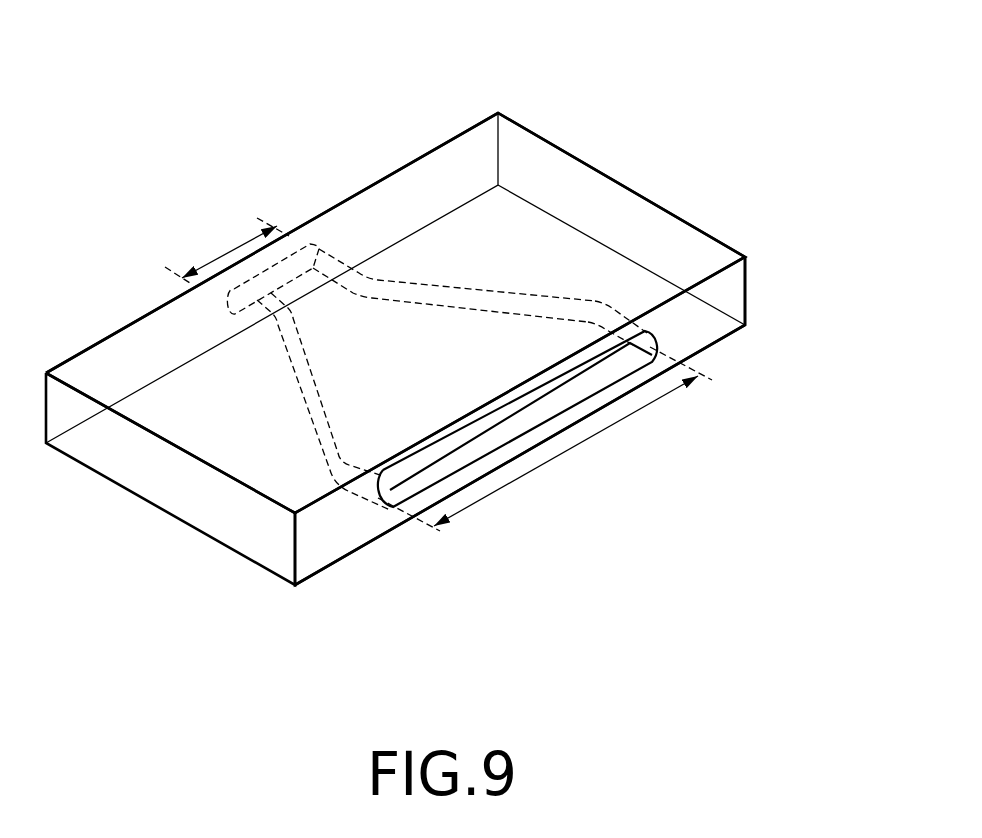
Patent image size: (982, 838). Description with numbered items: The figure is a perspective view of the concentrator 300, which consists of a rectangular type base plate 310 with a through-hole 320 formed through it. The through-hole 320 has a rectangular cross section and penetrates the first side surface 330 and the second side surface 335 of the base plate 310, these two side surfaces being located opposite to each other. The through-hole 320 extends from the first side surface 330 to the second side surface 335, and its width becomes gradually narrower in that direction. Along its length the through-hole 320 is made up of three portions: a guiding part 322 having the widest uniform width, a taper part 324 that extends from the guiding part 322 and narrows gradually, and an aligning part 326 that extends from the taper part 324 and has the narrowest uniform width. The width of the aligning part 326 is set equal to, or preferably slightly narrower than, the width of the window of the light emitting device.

The concentrator 300 is at (348, 680).
The base plate 310 is at (208, 515).
The through-hole 320 is at (493, 291).
The guiding part 322 is at (447, 283).
The taper part 324 is at (486, 208).
The aligning part 326 is at (342, 258).
The first side surface 330 is at (733, 290).
The second side surface 335 is at (437, 150).